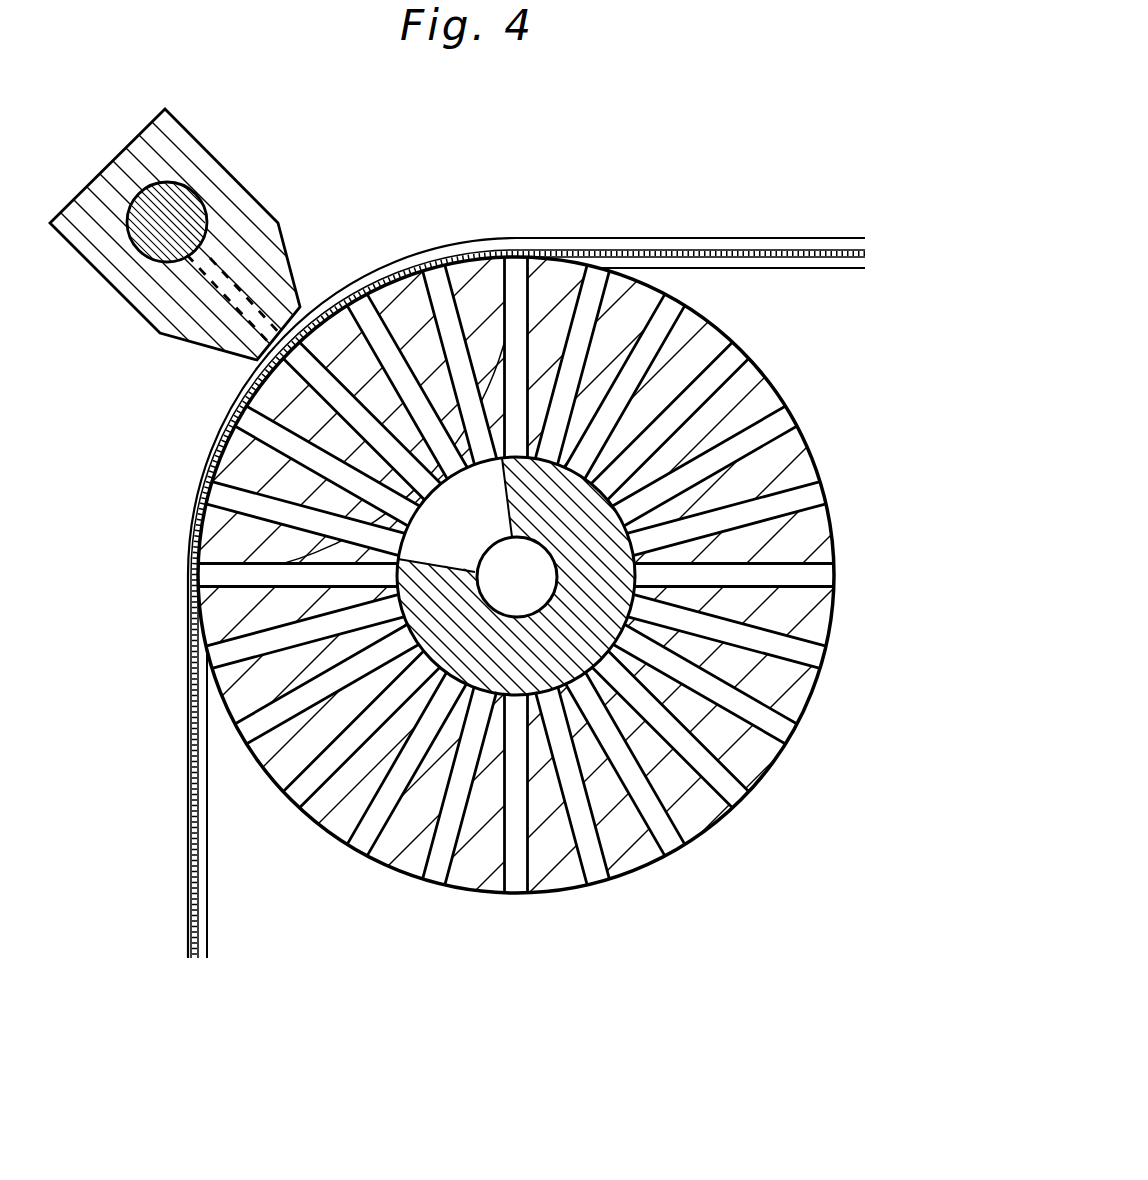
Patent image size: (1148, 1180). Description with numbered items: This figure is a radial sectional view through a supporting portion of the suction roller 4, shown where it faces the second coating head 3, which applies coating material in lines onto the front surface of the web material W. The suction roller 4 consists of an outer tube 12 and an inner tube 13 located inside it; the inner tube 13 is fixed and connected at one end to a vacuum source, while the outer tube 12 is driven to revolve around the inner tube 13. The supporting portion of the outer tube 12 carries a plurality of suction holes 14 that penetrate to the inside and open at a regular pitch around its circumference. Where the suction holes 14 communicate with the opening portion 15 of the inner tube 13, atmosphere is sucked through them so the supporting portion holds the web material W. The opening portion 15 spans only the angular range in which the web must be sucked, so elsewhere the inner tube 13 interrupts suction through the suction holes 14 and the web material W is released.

The second coating head 3 is at (215, 172).
The suction roller 4 is at (574, 647).
The outer tube 12 is at (574, 616).
The inner tube 13 is at (513, 694).
The suction holes 14 is at (783, 730).
The opening portion 15 is at (462, 535).
The web material W is at (183, 716).